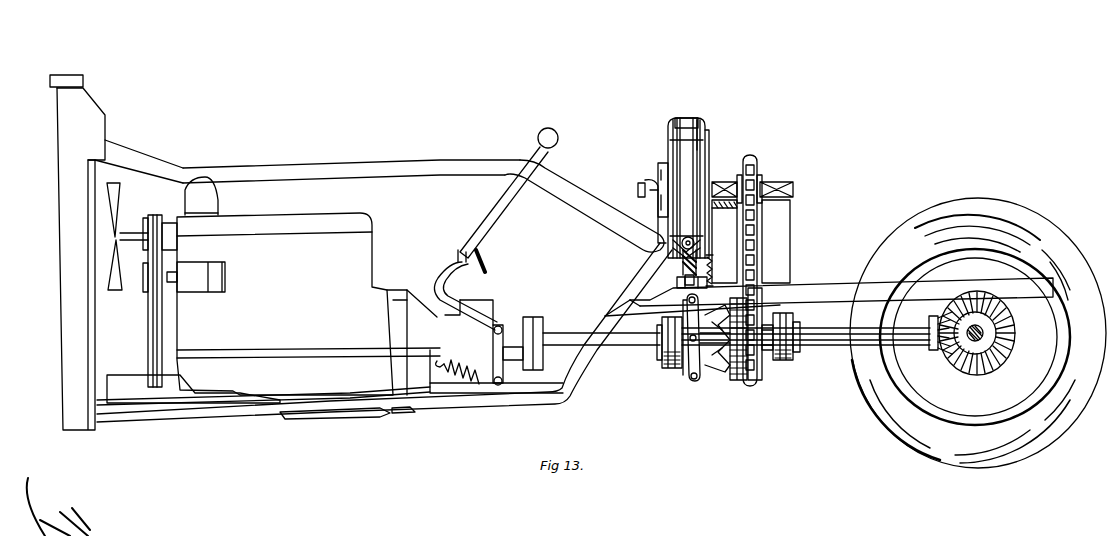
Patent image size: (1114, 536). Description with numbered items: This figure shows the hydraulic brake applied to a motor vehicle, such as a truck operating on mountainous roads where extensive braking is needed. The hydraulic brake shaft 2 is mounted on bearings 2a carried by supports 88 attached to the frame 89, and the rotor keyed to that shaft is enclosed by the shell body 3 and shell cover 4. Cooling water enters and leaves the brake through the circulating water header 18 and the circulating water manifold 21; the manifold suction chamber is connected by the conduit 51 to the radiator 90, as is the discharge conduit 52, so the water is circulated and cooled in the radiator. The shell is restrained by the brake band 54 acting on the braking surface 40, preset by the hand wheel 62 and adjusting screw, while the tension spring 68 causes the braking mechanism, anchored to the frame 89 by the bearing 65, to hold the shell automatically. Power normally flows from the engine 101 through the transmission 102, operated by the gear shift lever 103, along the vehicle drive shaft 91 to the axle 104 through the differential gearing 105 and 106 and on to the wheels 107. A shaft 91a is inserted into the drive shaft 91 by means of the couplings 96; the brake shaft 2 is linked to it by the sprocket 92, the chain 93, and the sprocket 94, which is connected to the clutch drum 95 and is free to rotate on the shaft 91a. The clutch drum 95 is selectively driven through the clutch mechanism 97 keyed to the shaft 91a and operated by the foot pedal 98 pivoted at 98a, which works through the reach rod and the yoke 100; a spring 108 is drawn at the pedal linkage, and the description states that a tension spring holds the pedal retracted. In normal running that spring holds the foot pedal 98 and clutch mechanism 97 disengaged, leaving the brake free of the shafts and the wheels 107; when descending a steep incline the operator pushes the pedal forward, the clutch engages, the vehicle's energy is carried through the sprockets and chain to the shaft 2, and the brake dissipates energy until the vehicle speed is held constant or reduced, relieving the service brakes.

The shaft 2 is at (720, 185).
The bearings 2a is at (724, 190).
The shell body 3 is at (707, 140).
The shell cover 4 is at (675, 138).
The circulating water header 18 is at (662, 180).
The circulating water manifold 21 is at (648, 190).
The shell braking surface 40 is at (701, 127).
The water feed conduit 51 is at (625, 280).
The discharge conduit 52 is at (597, 200).
The brake band 54 is at (689, 122).
The hand wheel 62 is at (696, 244).
The bearings 65 is at (688, 283).
The tension spring 68 is at (714, 260).
The supports 88 is at (787, 235).
The frame 89 is at (808, 284).
The radiator 90 is at (105, 122).
The vehicle drive shaft 91 is at (568, 335).
The drive shaft 91a is at (776, 357).
The sprocket 92 is at (755, 165).
The chain 93 is at (756, 226).
The sprocket 94 is at (762, 370).
The clutch drum 95 is at (738, 375).
The couplings 96 is at (668, 367).
The clutch mechanism 97 is at (718, 365).
The foot pedal 98 is at (482, 258).
The pivot 98a is at (502, 327).
The yoke 100 is at (692, 382).
The engine 101 is at (335, 218).
The transmission 102 is at (501, 322).
The gear shift lever 103 is at (533, 148).
The axle 104 is at (985, 335).
The differential gearing 105 is at (930, 340).
The differential gearing 106 is at (985, 362).
The wheels 107 is at (990, 200).
The spring 108 is at (467, 383).